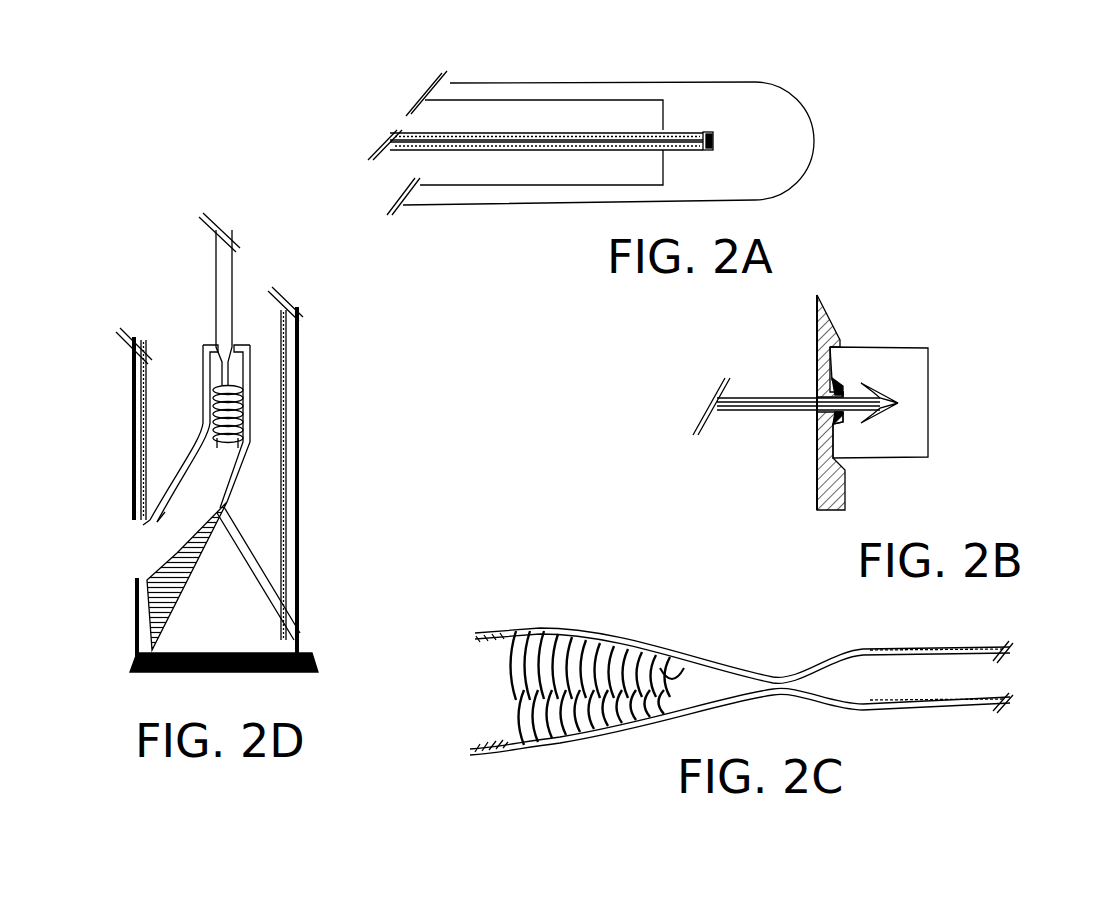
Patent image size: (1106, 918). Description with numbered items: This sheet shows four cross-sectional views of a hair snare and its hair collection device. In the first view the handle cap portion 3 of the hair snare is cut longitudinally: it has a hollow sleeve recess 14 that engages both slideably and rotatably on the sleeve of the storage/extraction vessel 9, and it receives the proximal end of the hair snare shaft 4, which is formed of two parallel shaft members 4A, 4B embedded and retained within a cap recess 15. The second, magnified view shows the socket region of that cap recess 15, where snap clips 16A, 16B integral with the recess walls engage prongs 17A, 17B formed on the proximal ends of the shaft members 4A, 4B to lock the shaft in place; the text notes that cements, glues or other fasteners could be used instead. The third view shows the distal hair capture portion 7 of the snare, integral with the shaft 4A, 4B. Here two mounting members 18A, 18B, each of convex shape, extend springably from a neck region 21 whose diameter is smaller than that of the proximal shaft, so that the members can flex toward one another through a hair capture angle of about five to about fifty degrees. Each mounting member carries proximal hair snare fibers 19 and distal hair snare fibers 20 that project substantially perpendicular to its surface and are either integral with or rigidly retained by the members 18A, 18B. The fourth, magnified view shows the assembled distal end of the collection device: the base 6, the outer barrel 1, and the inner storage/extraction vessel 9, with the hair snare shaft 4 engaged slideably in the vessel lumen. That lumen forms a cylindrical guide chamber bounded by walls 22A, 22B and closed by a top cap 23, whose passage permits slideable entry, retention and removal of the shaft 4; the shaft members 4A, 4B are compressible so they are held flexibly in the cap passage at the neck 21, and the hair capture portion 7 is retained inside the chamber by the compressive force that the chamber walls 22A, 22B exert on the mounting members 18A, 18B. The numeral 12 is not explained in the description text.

In FIG. 2D, the outer barrel 1 is at (130, 418).
In FIG. 2A, the handle cap portion 3 is at (448, 207).
In FIG. 2B, the hair snare shaft 4 is at (753, 408).
In FIG. 2D, the hair snare shaft 4 is at (227, 265).
In FIG. 2A, the first shaft member 4A is at (482, 142).
In FIG. 2C, the first shaft member 4A is at (1000, 662).
In FIG. 2A, the second shaft member 4B is at (505, 151).
In FIG. 2C, the second shaft member 4B is at (980, 707).
In FIG. 2D, the base 6 is at (310, 657).
In FIG. 2D, the hair capture portion 7 is at (245, 400).
In FIG. 2D, the storage/extraction vessel 9 is at (128, 458).
In FIG. 2D, the base 12 is at (263, 587).
In FIG. 2A, the hollow sleeve recess 14 is at (555, 112).
In FIG. 2A, the cap recess 15 is at (707, 130).
In FIG. 2B, the cap recess 15 is at (905, 353).
In FIG. 2B, the first snap clip 16A is at (842, 383).
In FIG. 2B, the second snap clip 16B is at (842, 425).
In FIG. 2B, the first prong 17A is at (863, 380).
In FIG. 2B, the second prong 17B is at (862, 418).
In FIG. 2C, the first mounting member 18A is at (607, 632).
In FIG. 2C, the second mounting member 18B is at (583, 750).
In FIG. 2C, the proximal hair snare fibers 19 is at (673, 670).
In FIG. 2C, the distal hair snare fibers 20 is at (503, 752).
In FIG. 2C, the neck region 21 is at (765, 677).
In FIG. 2D, the first chamber wall 22A is at (167, 507).
In FIG. 2D, the second chamber wall 22B is at (177, 552).
In FIG. 2D, the top cap 23 is at (205, 345).